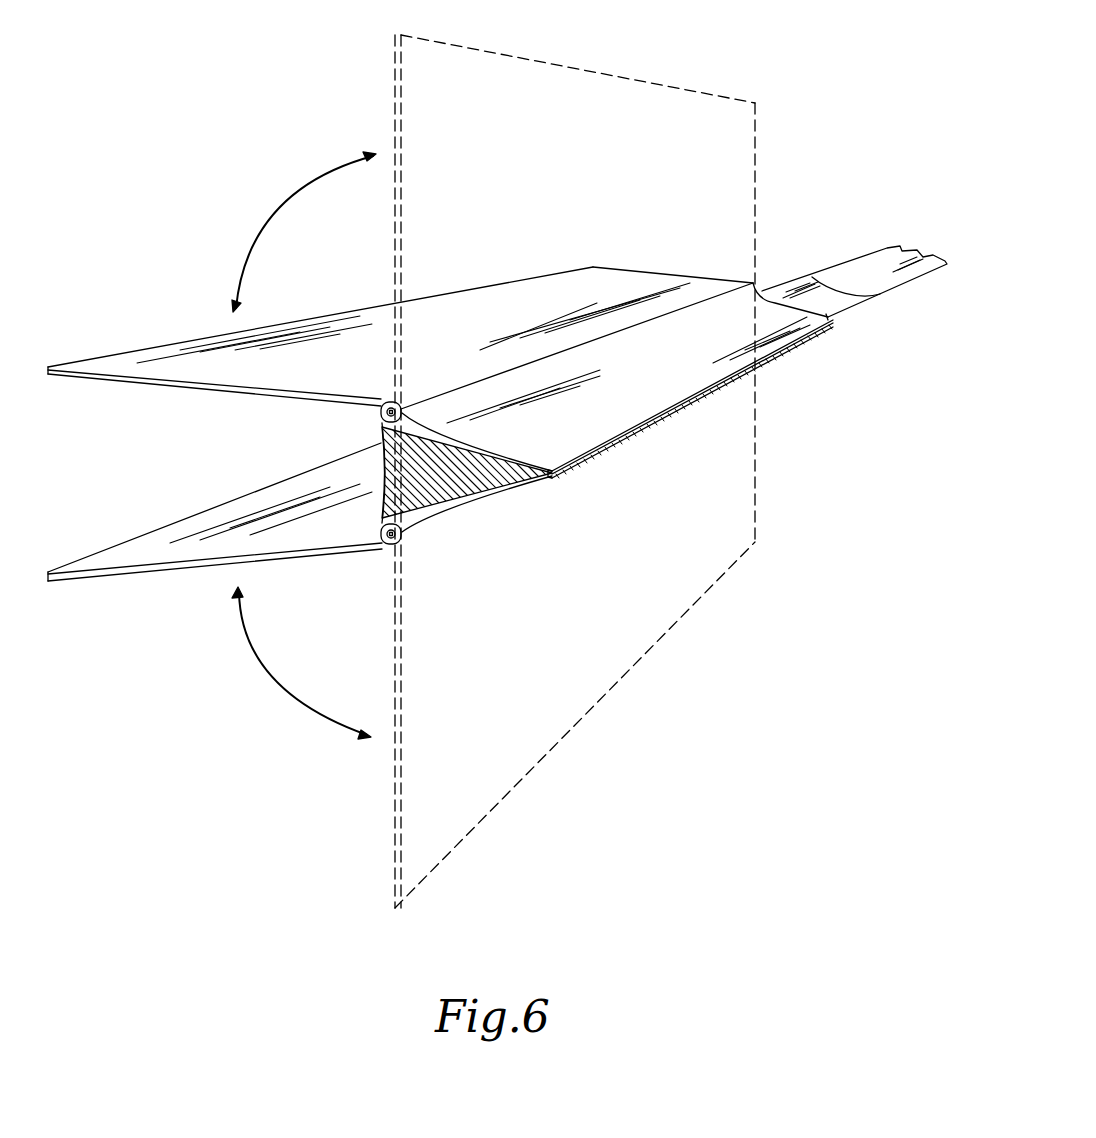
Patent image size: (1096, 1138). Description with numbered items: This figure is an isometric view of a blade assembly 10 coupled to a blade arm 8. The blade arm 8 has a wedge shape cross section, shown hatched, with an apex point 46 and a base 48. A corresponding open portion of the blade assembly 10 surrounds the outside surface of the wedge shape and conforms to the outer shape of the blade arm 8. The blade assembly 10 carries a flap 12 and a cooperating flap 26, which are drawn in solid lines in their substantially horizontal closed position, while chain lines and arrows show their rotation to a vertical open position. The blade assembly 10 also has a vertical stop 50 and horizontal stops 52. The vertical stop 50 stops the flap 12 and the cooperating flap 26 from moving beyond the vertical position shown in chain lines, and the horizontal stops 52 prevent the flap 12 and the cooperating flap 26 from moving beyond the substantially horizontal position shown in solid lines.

The blade arm 8 is at (483, 467).
The blade assembly 10 is at (640, 403).
The flap 12 is at (123, 350).
The cooperating flap 26 is at (107, 577).
The apex point 46 is at (543, 476).
The base 48 is at (380, 436).
The vertical stop 50 is at (401, 408).
The horizontal stop 52 is at (376, 412).